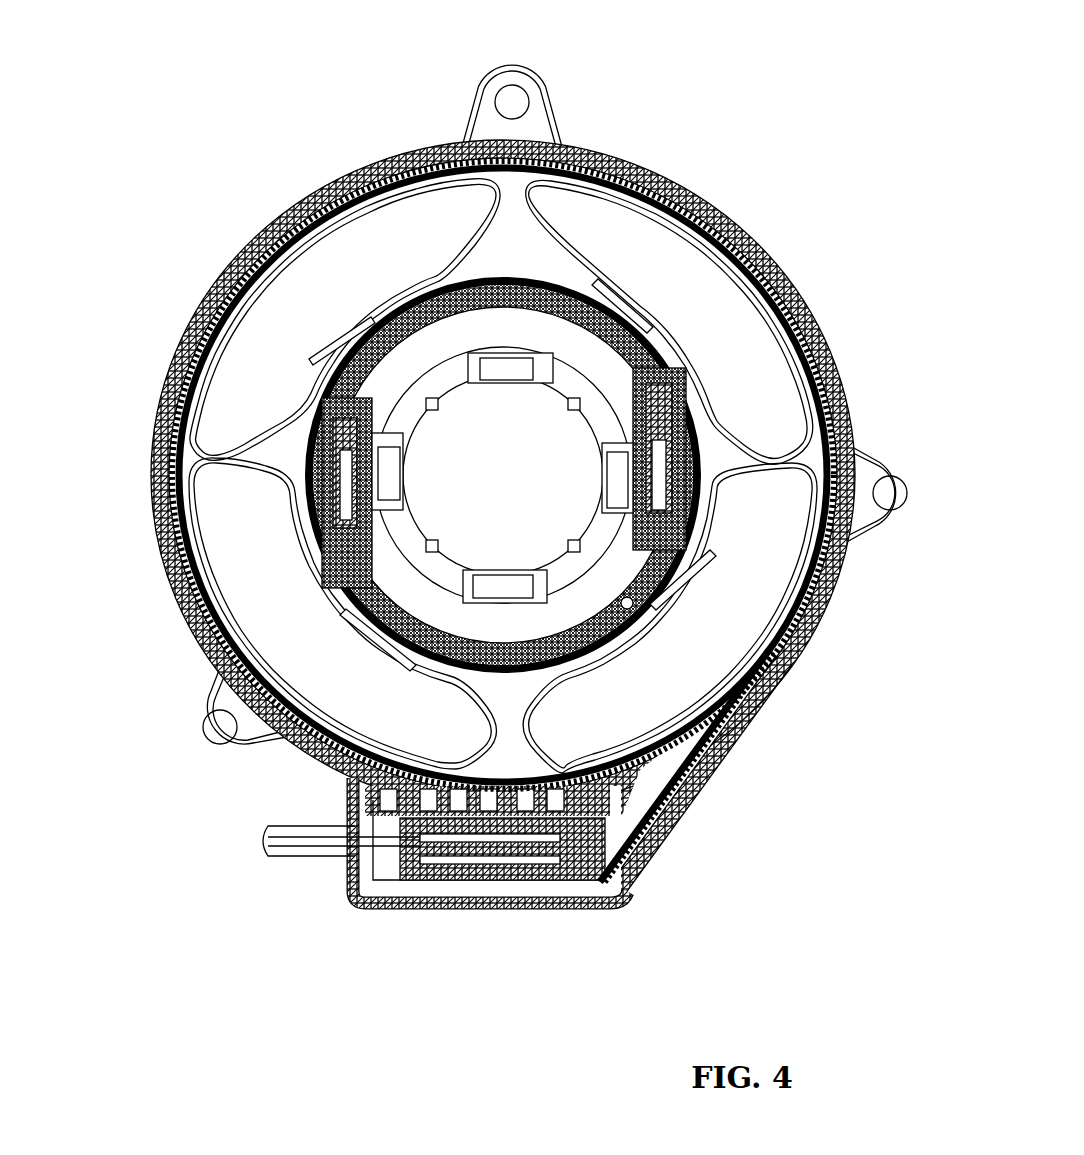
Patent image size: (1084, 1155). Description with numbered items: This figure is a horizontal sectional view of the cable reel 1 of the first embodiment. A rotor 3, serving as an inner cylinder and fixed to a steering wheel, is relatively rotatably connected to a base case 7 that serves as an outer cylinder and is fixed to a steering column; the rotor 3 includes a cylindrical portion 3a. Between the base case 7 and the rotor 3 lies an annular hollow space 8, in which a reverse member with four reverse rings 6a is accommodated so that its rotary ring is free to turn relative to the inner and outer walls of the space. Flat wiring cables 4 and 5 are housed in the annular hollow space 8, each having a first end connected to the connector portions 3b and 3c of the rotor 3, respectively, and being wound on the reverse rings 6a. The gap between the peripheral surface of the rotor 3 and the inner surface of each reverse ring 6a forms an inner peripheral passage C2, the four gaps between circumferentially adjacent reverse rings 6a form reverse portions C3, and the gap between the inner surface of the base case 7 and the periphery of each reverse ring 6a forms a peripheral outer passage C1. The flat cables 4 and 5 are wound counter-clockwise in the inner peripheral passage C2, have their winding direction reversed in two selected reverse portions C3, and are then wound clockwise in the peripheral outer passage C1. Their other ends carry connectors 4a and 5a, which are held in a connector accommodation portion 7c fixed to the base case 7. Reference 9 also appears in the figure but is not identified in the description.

The cable reel 1 is at (218, 268).
The base case 7 is at (360, 165).
The rotor 3 is at (360, 318).
The cylindrical portion 3a is at (633, 637).
The connector portion 3b is at (310, 399).
The connector portion 3c is at (627, 600).
The flat wiring cable 4 is at (667, 177).
The connector 4a is at (590, 887).
The flat wiring cable 5 is at (607, 843).
The connector 5a is at (553, 905).
The reverse ring 6a is at (730, 430).
The connector accommodation portion 7c is at (393, 903).
The annular hollow space 8 is at (537, 170).
The rotor 9 is at (683, 373).
The peripheral outer passage C1 is at (517, 253).
The inner peripheral passage C2 is at (480, 268).
The reverse portion C3 is at (503, 195).